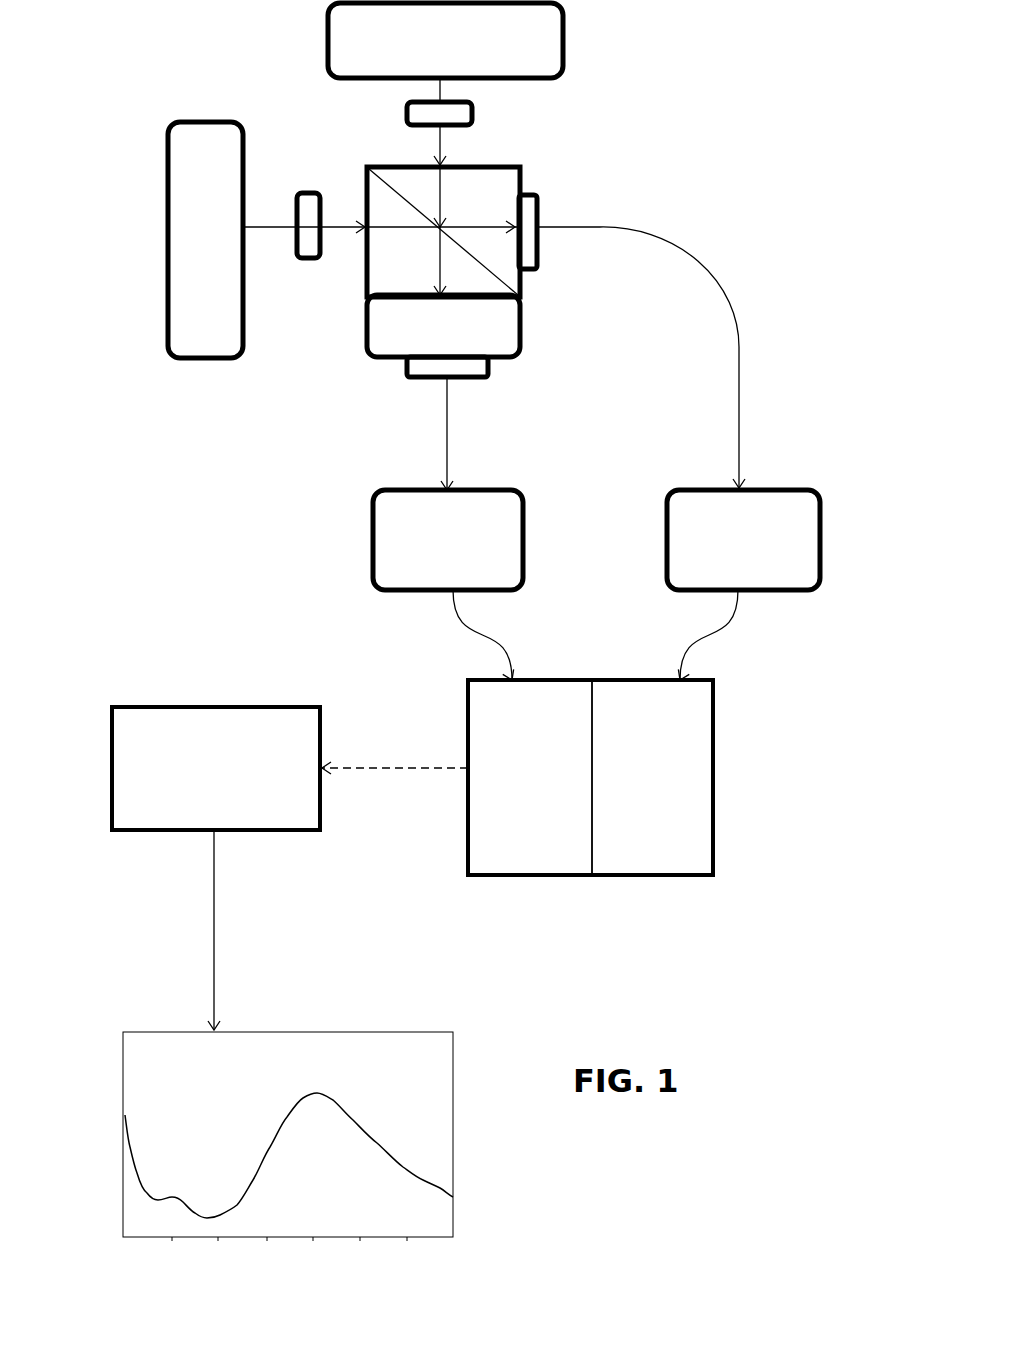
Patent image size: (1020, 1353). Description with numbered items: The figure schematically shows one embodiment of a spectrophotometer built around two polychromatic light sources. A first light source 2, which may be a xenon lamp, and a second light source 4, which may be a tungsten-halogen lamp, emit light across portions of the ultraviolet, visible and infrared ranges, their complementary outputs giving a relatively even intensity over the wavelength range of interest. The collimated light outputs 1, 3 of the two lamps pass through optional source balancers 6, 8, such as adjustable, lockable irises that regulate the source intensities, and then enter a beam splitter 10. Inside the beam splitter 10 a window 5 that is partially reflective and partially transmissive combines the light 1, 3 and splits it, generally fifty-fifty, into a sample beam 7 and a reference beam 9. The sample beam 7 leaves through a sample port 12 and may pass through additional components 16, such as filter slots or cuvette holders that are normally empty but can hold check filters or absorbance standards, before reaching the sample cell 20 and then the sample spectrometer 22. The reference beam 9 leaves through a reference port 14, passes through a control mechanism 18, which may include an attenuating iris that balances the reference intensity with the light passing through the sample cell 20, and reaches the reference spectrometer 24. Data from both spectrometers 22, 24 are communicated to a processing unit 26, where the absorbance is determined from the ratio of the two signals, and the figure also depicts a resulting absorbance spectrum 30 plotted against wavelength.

The light output 1 is at (338, 227).
The first light source 2 is at (168, 155).
The light output 3 is at (440, 150).
The second light source 4 is at (328, 48).
The window 5 is at (495, 272).
The source balancer 6 is at (305, 194).
The sample beam 7 is at (437, 253).
The source balancer 8 is at (472, 110).
The reference beam 9 is at (462, 227).
The beam splitter 10 is at (502, 185).
The sample port 12 is at (407, 367).
The reference port 14 is at (537, 250).
The additional components 16 is at (372, 335).
The control mechanism 18 is at (722, 490).
The sample cell 20 is at (425, 490).
The sample spectrometer 22 is at (468, 720).
The reference spectrometer 24 is at (713, 720).
The processing unit 26 is at (175, 707).
The absorbance spectrum 30 is at (312, 1032).